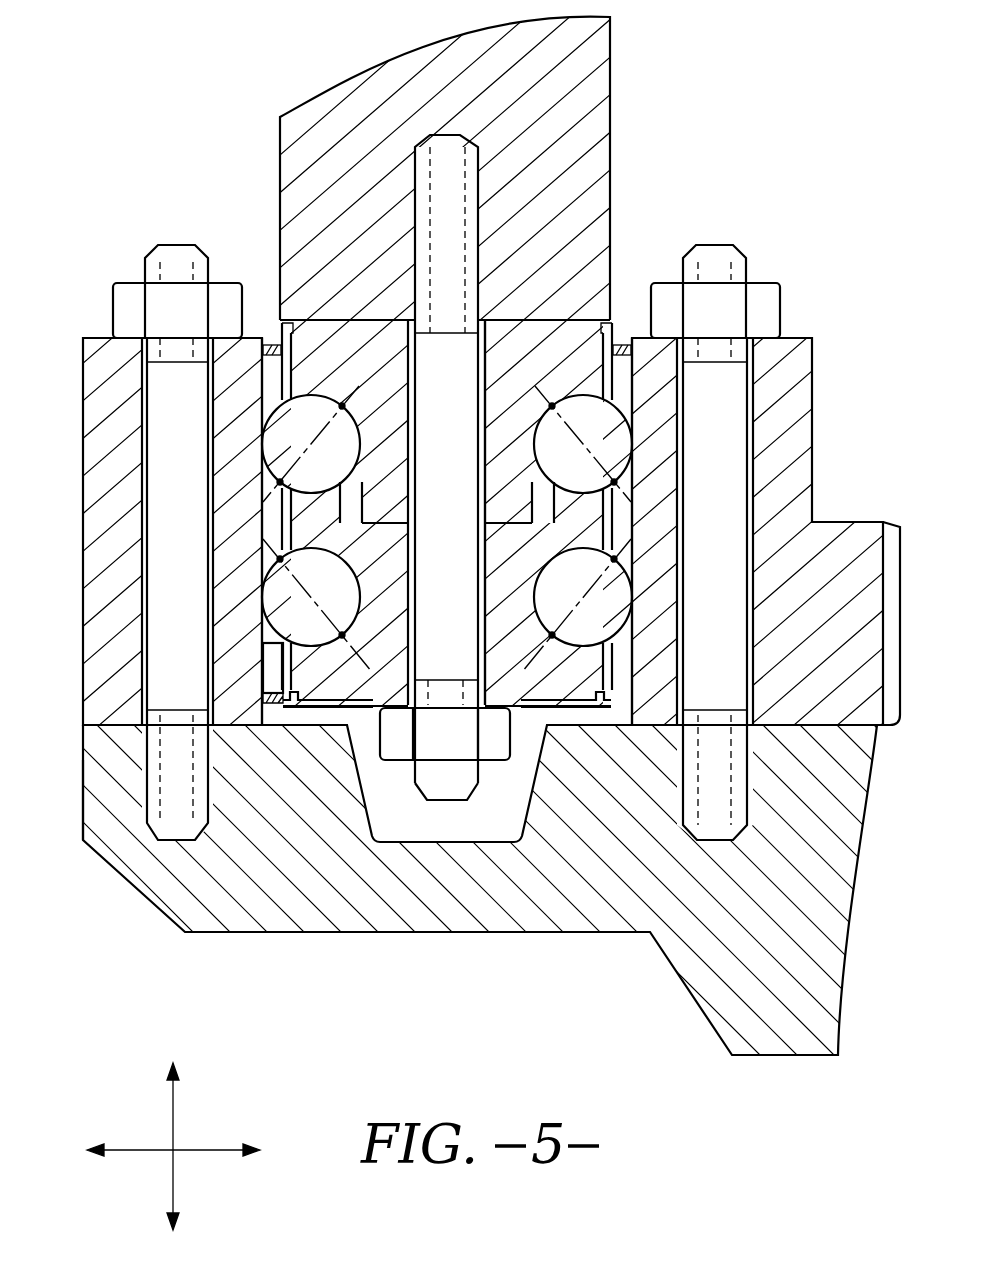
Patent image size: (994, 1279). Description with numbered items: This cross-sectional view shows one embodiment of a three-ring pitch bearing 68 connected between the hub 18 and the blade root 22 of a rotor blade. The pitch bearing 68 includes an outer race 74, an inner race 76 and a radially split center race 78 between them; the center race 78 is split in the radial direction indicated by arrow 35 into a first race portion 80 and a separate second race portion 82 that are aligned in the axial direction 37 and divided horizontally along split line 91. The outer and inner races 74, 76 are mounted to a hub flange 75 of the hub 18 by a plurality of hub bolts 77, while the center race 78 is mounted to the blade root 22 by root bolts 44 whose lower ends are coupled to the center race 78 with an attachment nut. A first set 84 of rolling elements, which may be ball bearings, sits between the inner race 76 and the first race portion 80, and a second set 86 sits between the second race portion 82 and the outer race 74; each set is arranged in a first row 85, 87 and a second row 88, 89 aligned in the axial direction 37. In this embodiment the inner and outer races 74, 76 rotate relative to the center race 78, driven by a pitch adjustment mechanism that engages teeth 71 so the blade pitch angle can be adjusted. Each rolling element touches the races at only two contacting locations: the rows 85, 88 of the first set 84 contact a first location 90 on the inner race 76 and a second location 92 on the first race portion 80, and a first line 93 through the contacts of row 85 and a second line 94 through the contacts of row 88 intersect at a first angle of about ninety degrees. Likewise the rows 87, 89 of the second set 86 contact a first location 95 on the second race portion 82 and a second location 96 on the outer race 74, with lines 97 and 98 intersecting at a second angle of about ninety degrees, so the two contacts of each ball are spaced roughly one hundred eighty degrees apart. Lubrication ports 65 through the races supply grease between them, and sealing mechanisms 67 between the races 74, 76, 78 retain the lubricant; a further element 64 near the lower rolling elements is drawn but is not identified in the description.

The hub 18 is at (263, 932).
The blade root 22 is at (612, 118).
The radial direction arrow 35 is at (200, 1152).
The axial direction 37 is at (175, 1115).
The root bolt 44 is at (458, 652).
The retainer plate 64 is at (282, 700).
The lubrication port 65 is at (272, 675).
The sealing mechanism 67 is at (280, 336).
The pitch bearing 68 is at (790, 215).
The teeth 71 is at (906, 536).
The outer race 74 is at (798, 447).
The hub flange 75 is at (92, 805).
The inner race 76 is at (105, 502).
The hub bolt 77 is at (163, 573).
The center race 78 is at (497, 325).
The first race portion 80 is at (390, 325).
The second race portion 82 is at (437, 652).
The first set of rolling elements 84 is at (318, 393).
The first row of rolling elements of the first set 85 is at (280, 427).
The second set of rolling elements 86 is at (575, 393).
The first row of rolling elements of the second set 87 is at (612, 428).
The second row of rolling elements of the first set 88 is at (288, 605).
The second row of rolling elements of the second set 89 is at (634, 622).
The first contacting location 90 is at (278, 482).
The split line 91 is at (507, 525).
The second contacting location 92 is at (344, 407).
The first line 93 is at (372, 395).
The second line 94 is at (368, 662).
The first contacting location 95 is at (550, 407).
The second contacting location 96 is at (616, 482).
The first line 97 is at (522, 395).
The second line 98 is at (526, 662).